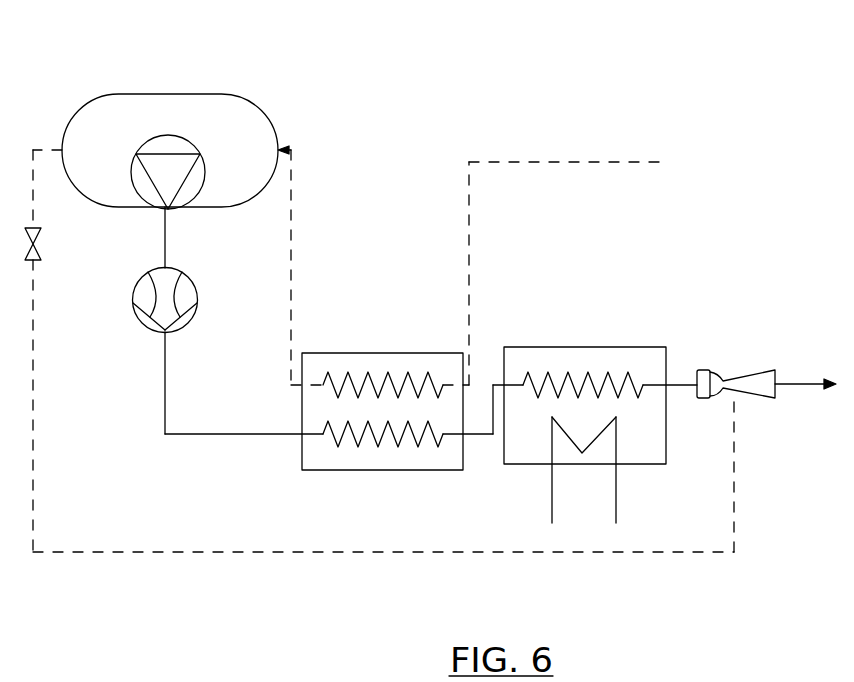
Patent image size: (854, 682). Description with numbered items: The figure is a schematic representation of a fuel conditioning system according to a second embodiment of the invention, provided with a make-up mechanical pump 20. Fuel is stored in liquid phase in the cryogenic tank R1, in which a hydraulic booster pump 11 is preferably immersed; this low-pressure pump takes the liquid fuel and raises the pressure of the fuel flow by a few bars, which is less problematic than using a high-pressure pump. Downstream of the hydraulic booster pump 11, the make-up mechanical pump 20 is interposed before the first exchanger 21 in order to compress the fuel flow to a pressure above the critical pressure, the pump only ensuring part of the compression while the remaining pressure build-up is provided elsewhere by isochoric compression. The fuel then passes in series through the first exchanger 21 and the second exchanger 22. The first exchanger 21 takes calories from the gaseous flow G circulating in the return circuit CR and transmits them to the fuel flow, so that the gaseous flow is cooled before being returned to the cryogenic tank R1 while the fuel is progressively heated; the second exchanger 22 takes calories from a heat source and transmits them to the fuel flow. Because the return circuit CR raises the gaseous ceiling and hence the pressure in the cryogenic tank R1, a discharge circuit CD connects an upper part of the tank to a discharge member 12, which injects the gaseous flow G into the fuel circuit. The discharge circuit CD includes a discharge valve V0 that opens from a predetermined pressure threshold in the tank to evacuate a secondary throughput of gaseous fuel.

The hydraulic booster pump 11 is at (173, 137).
The discharge member 12 is at (747, 373).
The make-up mechanical pump 20 is at (140, 323).
The first exchanger 21 is at (360, 352).
The second exchanger 22 is at (575, 347).
The cryogenic tank R1 is at (268, 115).
The discharge valve V0 is at (52, 244).
The return circuit CR is at (505, 162).
The discharge circuit CD is at (207, 552).
The gaseous flow G is at (416, 348).